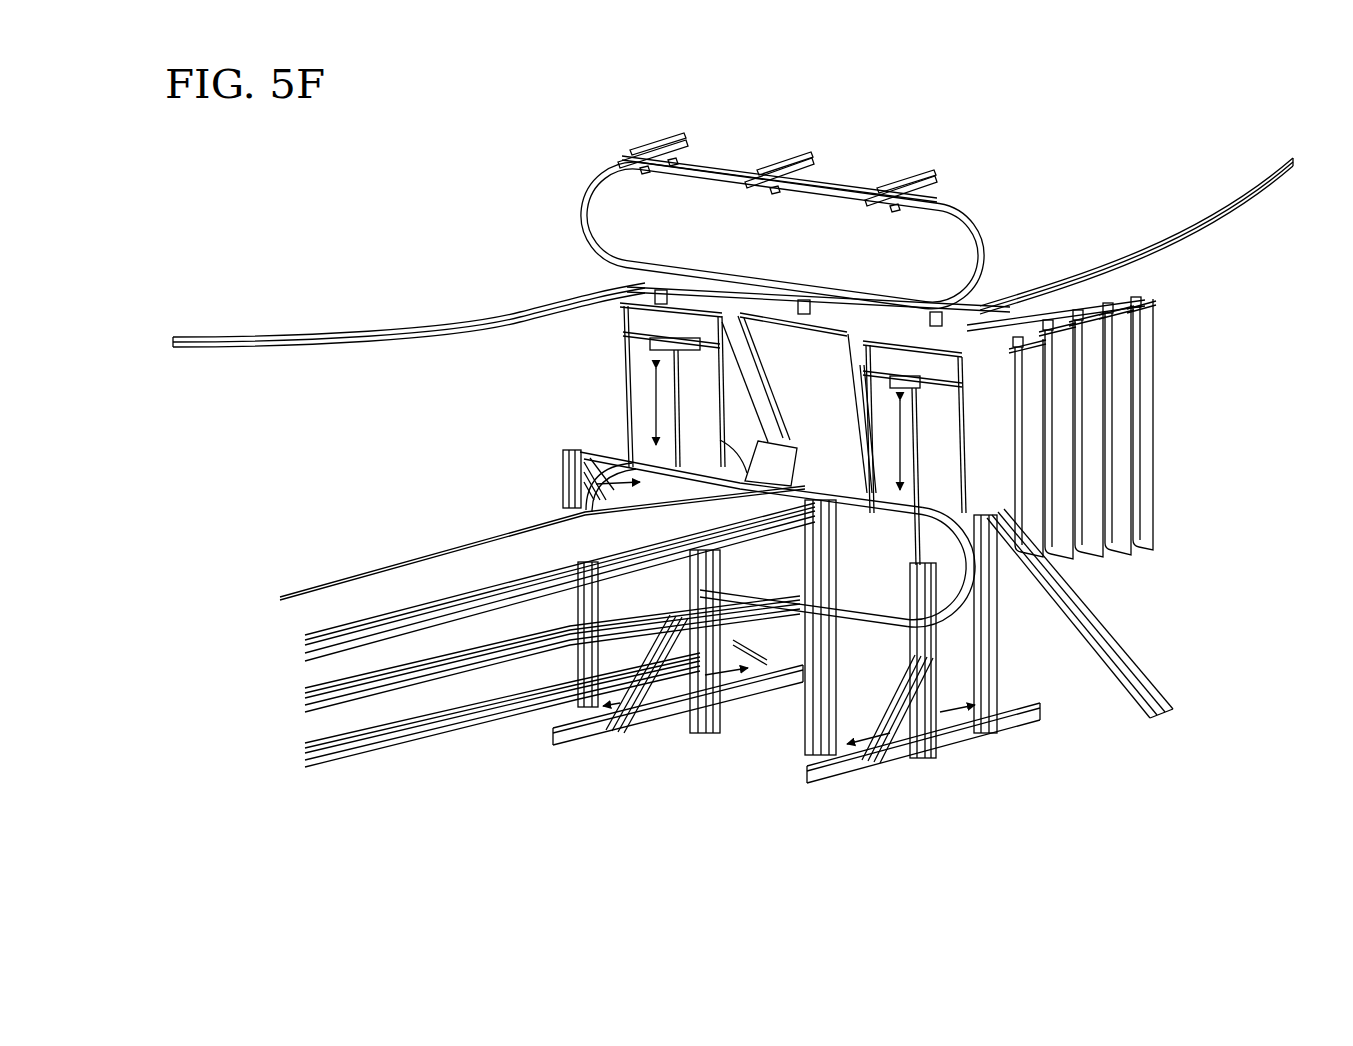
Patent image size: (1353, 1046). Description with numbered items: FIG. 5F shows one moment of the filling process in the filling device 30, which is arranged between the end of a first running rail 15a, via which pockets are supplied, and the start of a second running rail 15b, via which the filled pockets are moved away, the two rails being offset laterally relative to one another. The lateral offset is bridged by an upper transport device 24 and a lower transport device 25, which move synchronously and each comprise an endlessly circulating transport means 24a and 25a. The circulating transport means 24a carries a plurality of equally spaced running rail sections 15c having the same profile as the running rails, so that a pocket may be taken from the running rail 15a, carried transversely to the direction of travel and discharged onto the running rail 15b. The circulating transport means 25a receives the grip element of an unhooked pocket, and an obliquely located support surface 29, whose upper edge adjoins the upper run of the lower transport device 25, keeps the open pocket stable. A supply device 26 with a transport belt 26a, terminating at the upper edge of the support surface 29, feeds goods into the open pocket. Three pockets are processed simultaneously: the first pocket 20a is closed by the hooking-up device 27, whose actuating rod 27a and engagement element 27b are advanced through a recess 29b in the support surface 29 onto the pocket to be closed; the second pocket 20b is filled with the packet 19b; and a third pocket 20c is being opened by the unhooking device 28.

The first running rail 15a is at (1222, 226).
The second running rail 15b is at (245, 338).
The running rail sections 15c is at (893, 187).
The packet 19b is at (790, 477).
The first pocket 20a is at (606, 333).
The second pocket 20b is at (825, 365).
The third pocket 20c is at (975, 428).
The upper transport device 24 is at (800, 252).
The circulating transport means 24a is at (712, 160).
The lower transport device 25 is at (873, 565).
The circulating transport means 25a is at (898, 616).
The supply device 26 is at (443, 752).
The transport belt 26a is at (340, 634).
The hooking-up device 27 is at (647, 754).
The actuating rod 27a is at (672, 398).
The engagement element 27b is at (645, 346).
The unhooking device 28 is at (913, 778).
The support surface 29 is at (1067, 673).
The recess 29b is at (594, 484).
The filling device 30 is at (578, 392).